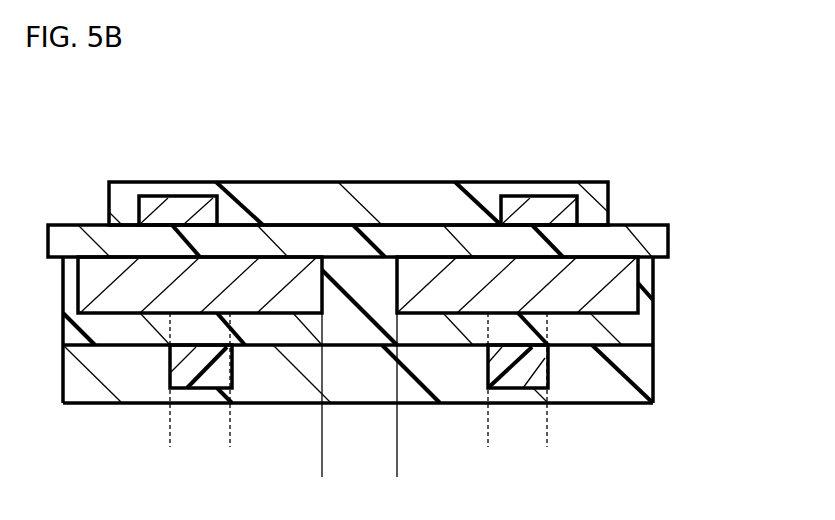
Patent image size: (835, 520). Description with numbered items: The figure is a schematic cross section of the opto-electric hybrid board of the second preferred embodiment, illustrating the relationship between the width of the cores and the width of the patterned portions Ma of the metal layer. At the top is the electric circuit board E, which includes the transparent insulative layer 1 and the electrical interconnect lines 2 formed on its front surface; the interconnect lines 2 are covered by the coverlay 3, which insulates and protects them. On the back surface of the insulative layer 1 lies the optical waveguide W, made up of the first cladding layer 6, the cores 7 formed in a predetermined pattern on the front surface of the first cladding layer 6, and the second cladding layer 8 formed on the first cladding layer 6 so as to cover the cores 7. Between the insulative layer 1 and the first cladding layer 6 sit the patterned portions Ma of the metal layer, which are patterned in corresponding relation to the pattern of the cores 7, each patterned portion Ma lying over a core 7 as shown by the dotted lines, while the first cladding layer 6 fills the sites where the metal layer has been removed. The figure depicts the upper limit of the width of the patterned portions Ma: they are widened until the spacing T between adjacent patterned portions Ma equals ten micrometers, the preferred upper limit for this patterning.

The insulative layer 1 is at (653, 242).
The electrical interconnect lines 2 is at (185, 213).
The coverlay 3 is at (382, 197).
The first cladding layer 6 is at (427, 330).
The cores 7 is at (185, 375).
The second cladding layer 8 is at (277, 390).
The patterned portions of the metal layer Ma is at (623, 285).
The electric circuit board E is at (709, 183).
The optical waveguide W is at (709, 315).
The spacing T is at (322, 462).